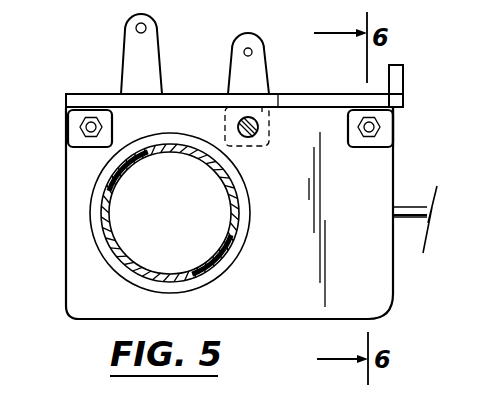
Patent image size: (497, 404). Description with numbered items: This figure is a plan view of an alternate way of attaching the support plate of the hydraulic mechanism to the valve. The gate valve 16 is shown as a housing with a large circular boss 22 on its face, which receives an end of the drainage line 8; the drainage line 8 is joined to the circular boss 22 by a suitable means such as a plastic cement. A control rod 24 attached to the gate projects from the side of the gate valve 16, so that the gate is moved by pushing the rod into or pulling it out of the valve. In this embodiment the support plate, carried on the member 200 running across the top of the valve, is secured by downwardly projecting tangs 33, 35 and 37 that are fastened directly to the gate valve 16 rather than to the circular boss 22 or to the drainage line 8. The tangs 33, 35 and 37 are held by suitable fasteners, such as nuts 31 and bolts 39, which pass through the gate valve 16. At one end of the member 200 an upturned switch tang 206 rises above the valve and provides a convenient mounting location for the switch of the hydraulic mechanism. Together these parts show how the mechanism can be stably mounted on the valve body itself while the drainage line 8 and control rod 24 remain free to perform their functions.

The drainage line 8 is at (101, 214).
The gate valve 16 is at (378, 279).
The circular boss 22 is at (107, 253).
The control rod 24 is at (407, 209).
The nut 31 is at (393, 146).
The downwardly projecting tang 33 is at (77, 137).
The downwardly projecting tang 35 is at (262, 112).
The downwardly projecting tang 37 is at (392, 123).
The bolt 39 is at (238, 112).
The mounting bar 200 is at (95, 100).
The switch tang 206 is at (403, 75).